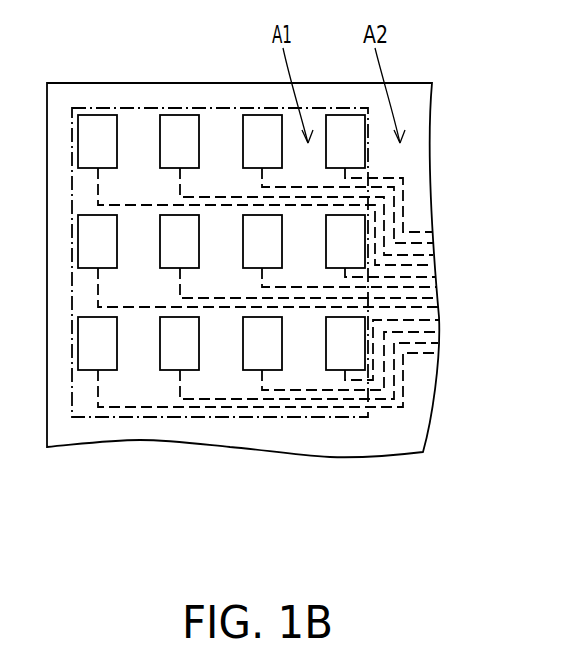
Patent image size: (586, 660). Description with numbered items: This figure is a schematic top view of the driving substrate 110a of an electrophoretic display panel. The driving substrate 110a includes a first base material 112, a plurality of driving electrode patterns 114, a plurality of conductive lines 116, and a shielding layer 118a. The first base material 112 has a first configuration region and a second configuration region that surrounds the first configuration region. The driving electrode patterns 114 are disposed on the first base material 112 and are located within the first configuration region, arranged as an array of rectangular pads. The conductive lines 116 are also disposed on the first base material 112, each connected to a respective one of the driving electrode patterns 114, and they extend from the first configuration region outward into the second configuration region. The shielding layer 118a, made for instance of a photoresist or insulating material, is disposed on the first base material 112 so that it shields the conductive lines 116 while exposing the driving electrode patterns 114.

The driving substrate 110a is at (276, 311).
The first base material 112 is at (317, 427).
The driving electrode patterns 114 is at (90, 363).
The conductive lines 116 is at (244, 399).
The shielding layer 118a is at (402, 425).